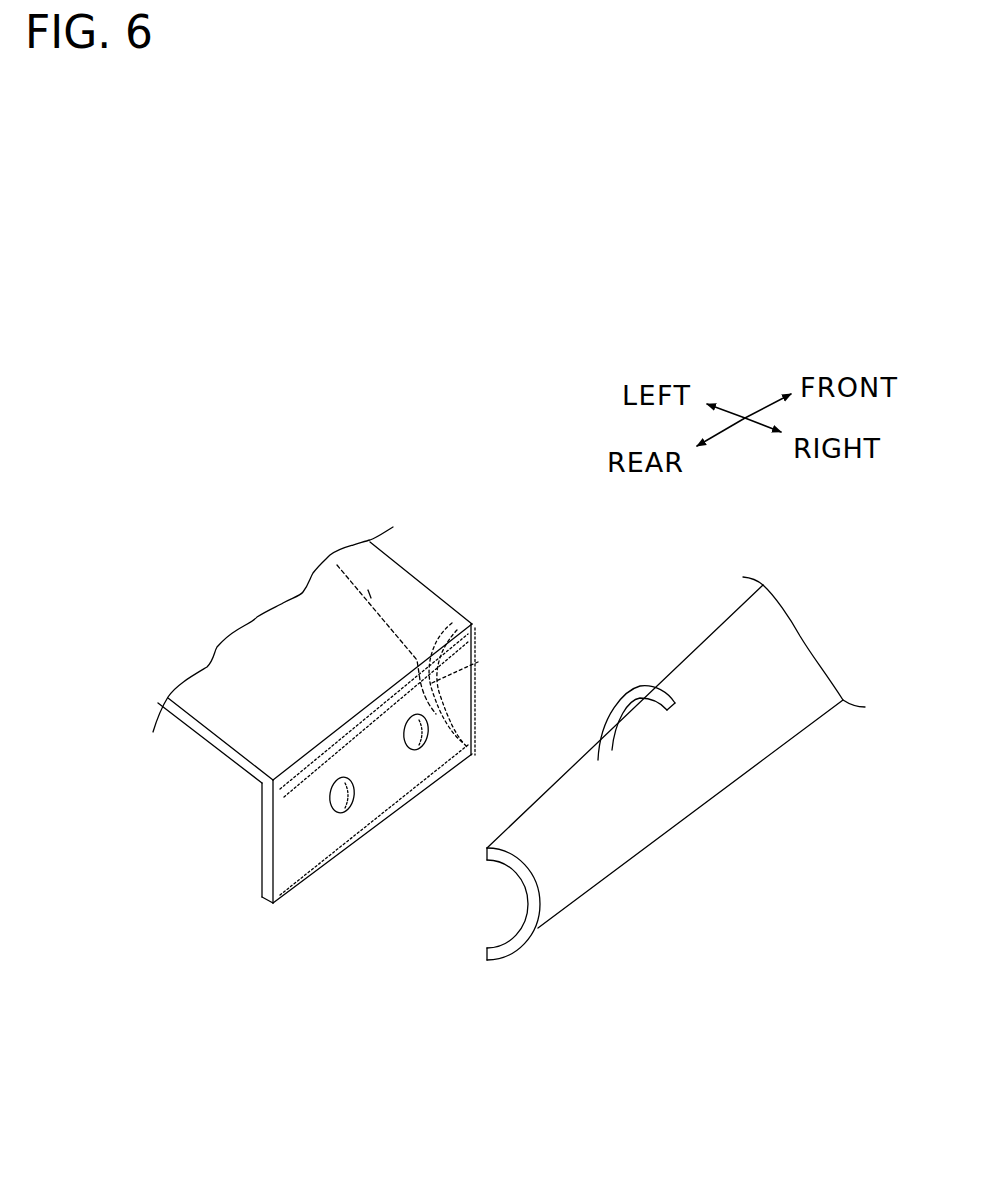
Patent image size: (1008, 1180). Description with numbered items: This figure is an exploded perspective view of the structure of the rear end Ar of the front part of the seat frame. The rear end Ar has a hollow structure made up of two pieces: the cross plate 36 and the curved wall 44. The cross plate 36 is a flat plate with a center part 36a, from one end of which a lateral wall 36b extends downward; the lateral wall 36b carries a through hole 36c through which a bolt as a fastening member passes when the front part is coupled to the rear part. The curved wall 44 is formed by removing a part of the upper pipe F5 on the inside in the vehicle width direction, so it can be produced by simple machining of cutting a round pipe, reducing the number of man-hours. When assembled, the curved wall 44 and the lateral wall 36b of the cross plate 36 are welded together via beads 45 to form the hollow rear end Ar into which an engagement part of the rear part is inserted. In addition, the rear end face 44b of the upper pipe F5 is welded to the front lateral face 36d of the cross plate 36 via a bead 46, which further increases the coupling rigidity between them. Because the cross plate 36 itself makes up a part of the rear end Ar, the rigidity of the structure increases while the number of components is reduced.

The cross plate 36 is at (342, 752).
The center part 36a is at (223, 712).
The lateral wall 36b is at (410, 770).
The through hole 36c is at (421, 742).
The front lateral face 36d is at (370, 592).
The beads 45 is at (266, 815).
The bead 46 is at (478, 662).
The curved wall 44 is at (676, 768).
The rear end face 44b is at (605, 712).
The upper pipe F5 is at (716, 645).
The rear end Ar is at (413, 942).